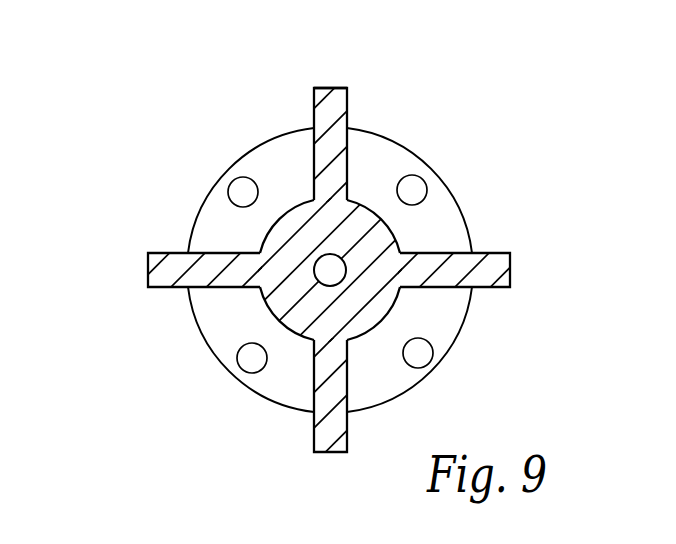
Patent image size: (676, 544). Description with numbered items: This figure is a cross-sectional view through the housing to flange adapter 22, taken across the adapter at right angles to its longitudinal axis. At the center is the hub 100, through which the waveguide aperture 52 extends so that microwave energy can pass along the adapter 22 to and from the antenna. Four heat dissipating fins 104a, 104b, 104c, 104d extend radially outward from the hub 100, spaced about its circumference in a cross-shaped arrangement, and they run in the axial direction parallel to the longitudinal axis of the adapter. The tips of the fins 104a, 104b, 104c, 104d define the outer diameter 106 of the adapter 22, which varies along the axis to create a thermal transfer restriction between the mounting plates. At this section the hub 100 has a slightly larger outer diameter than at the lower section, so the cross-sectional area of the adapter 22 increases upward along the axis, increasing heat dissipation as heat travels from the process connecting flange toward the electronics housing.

The housing to flange adapter 22 is at (435, 135).
The waveguide aperture 52 is at (338, 276).
The hub 100 is at (381, 316).
The heat dissipating fin 104a is at (157, 252).
The heat dissipating fin 104b is at (313, 418).
The heat dissipating fin 104c is at (500, 253).
The heat dissipating fin 104d is at (313, 107).
The outer diameter 106 is at (337, 88).